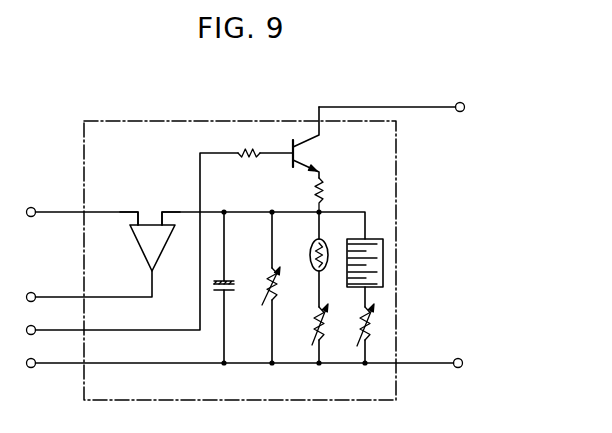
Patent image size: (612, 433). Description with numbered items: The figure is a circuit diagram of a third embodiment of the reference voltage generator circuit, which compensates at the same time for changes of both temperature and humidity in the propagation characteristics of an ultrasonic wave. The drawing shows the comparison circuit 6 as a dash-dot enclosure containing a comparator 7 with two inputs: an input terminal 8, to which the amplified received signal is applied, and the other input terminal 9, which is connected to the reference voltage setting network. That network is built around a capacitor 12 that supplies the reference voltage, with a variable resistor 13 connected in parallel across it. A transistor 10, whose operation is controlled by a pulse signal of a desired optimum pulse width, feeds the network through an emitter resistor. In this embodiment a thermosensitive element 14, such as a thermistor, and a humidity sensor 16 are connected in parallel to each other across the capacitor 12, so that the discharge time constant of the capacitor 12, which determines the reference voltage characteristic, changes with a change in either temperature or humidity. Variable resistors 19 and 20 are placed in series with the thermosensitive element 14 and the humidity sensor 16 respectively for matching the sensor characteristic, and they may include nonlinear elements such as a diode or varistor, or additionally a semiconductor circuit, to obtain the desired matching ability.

The comparison circuit 6 is at (397, 166).
The comparator 7 is at (143, 249).
The input terminal 8 is at (133, 210).
The other input terminal 9 is at (168, 210).
The transistor 10 is at (306, 153).
The capacitor 12 is at (236, 286).
The variable resistor 13 is at (266, 281).
The thermosensitive element 14 is at (309, 248).
The humidity sensor 16 is at (384, 252).
The variable resistor 19 is at (312, 325).
The variable resistor 20 is at (376, 325).